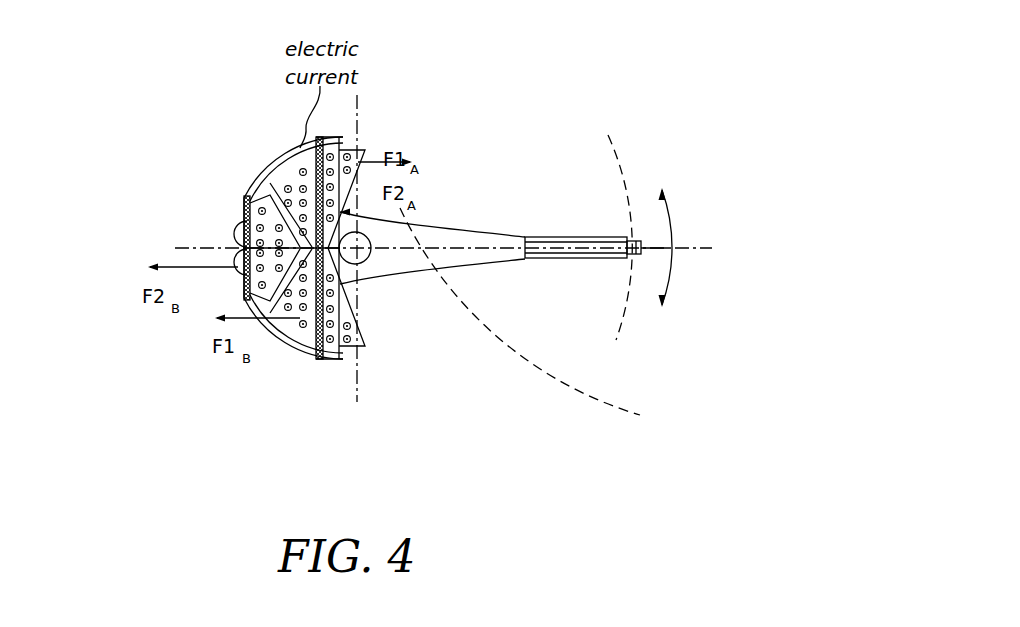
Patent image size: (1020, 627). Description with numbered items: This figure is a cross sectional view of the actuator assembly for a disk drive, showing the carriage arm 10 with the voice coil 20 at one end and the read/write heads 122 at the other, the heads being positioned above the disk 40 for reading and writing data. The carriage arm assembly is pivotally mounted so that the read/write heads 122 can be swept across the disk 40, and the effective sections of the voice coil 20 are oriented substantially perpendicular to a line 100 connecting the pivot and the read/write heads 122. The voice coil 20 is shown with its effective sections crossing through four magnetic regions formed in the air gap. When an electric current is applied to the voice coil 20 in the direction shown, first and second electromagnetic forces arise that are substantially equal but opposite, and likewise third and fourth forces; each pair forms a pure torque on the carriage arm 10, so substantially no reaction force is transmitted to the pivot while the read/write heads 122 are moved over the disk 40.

The carriage arm 10 is at (448, 212).
The voice coil 20 is at (272, 148).
The disk 40 is at (557, 342).
The line connecting the pivot and the read/write heads 100 is at (481, 232).
The read/write heads 122 is at (672, 238).